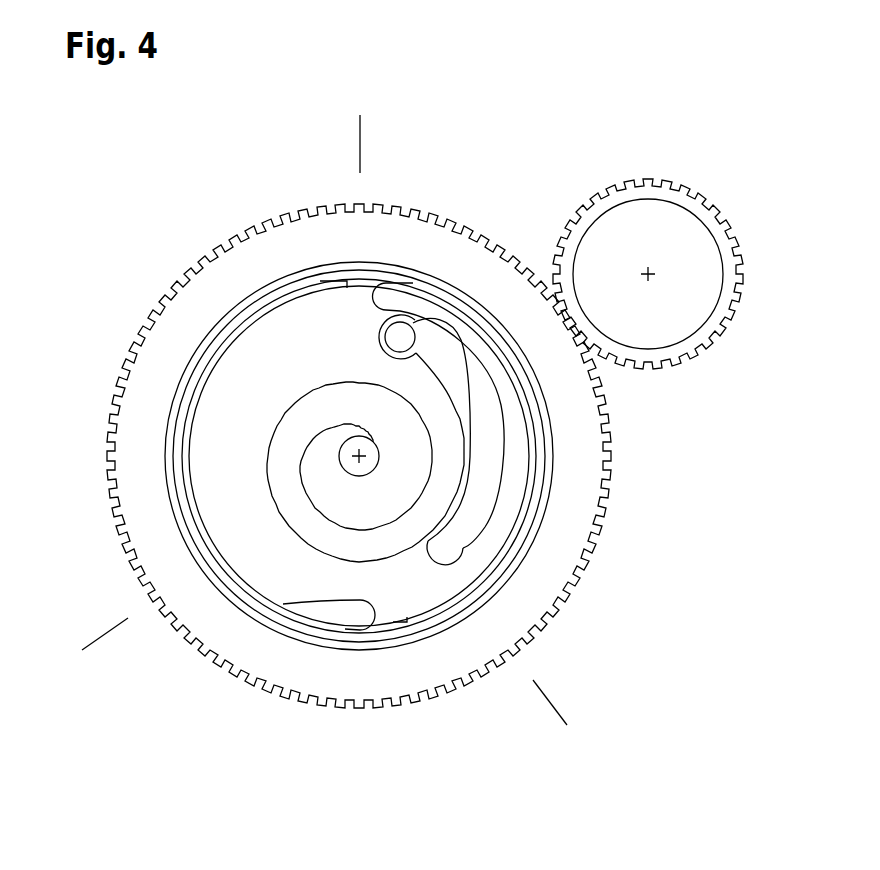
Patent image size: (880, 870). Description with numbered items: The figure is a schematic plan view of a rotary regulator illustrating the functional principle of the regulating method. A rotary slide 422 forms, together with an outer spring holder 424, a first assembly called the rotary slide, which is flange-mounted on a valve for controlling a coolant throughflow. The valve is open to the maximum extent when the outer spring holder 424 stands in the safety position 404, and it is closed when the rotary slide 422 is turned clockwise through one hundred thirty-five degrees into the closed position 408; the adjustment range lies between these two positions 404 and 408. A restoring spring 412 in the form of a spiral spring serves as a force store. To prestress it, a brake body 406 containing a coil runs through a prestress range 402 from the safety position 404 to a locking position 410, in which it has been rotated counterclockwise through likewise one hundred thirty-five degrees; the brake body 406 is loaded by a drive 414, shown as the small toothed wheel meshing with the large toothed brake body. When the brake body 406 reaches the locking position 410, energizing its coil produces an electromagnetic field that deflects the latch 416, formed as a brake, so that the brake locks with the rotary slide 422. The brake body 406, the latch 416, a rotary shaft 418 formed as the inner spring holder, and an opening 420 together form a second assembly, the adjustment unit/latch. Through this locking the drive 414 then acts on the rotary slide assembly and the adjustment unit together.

The prestress range 402 is at (379, 430).
The safety position 404 is at (374, 141).
The brake body 406 is at (612, 478).
The closed position 408 is at (533, 711).
The locking position 410 is at (111, 647).
The restoring spring 412 is at (244, 468).
The drive 414 is at (756, 313).
The latch 416 is at (528, 474).
The rotary shaft 418 is at (358, 452).
The opening 420 is at (466, 543).
The rotary slide 422 is at (345, 658).
The outer spring holder 424 is at (402, 335).